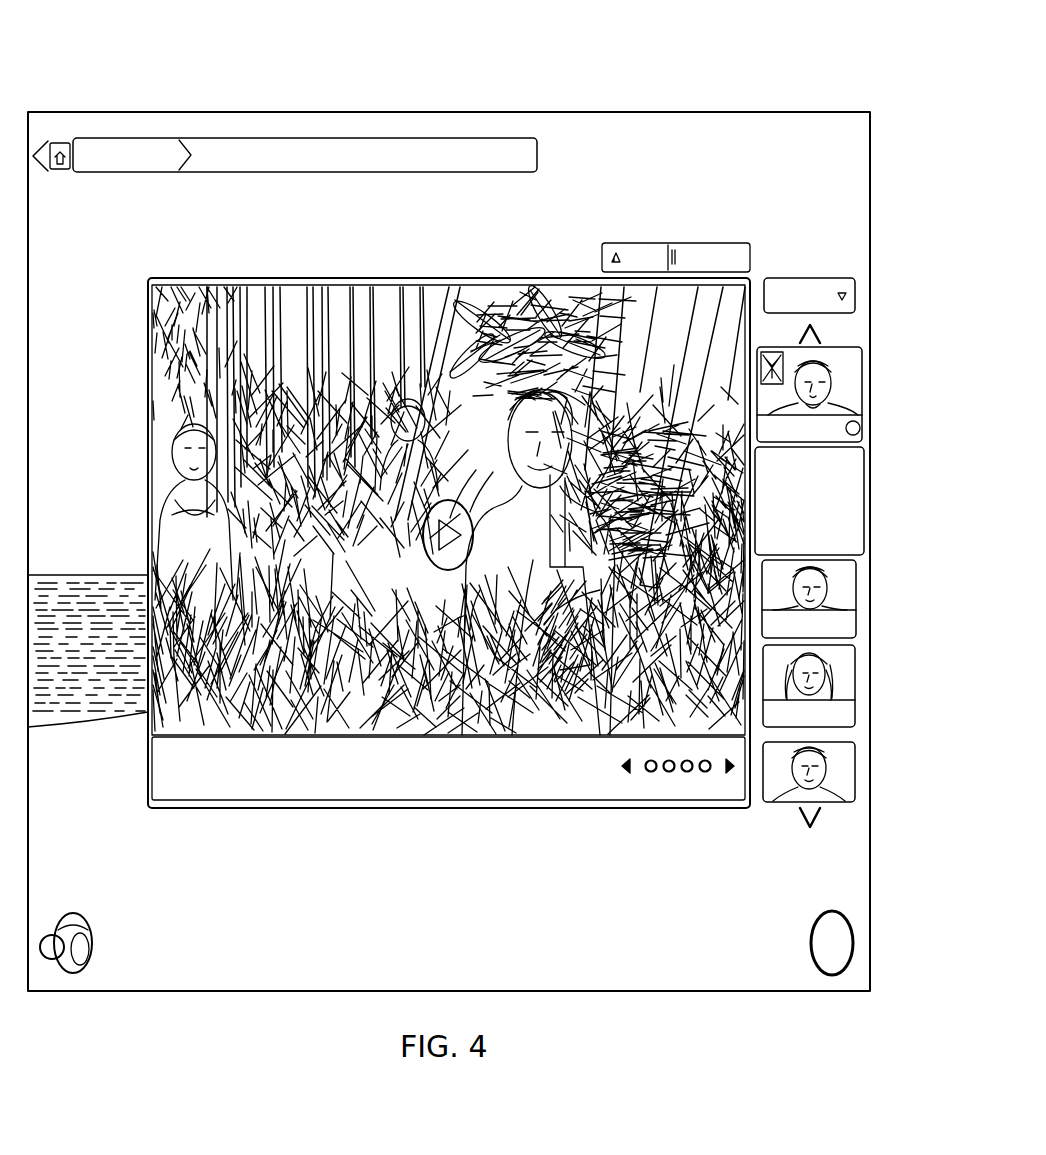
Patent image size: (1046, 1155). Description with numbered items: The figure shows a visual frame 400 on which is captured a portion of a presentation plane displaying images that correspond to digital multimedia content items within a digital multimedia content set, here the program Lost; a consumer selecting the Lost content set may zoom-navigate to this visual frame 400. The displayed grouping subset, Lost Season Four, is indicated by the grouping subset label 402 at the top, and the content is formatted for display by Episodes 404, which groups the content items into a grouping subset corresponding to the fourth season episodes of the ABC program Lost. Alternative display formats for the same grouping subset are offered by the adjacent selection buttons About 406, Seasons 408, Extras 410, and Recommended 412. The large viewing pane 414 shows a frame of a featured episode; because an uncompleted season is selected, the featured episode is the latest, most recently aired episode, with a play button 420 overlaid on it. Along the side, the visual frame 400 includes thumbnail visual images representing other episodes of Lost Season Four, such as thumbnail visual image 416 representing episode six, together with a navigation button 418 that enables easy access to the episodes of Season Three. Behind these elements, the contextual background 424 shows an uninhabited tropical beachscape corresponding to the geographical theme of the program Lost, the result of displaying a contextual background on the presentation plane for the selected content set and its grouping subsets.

The visual frame 400 is at (690, 70).
The grouping subset label 402 is at (128, 136).
The Episodes 404 is at (222, 136).
The About 406 is at (298, 136).
The Seasons 408 is at (362, 136).
The Extras 410 is at (425, 136).
The Recommended 412 is at (498, 136).
The viewing pane 414 is at (449, 574).
The thumbnail visual image 416 is at (788, 714).
The navigation button 418 is at (820, 272).
The play button 420 is at (456, 568).
The contextual background 424 is at (162, 944).